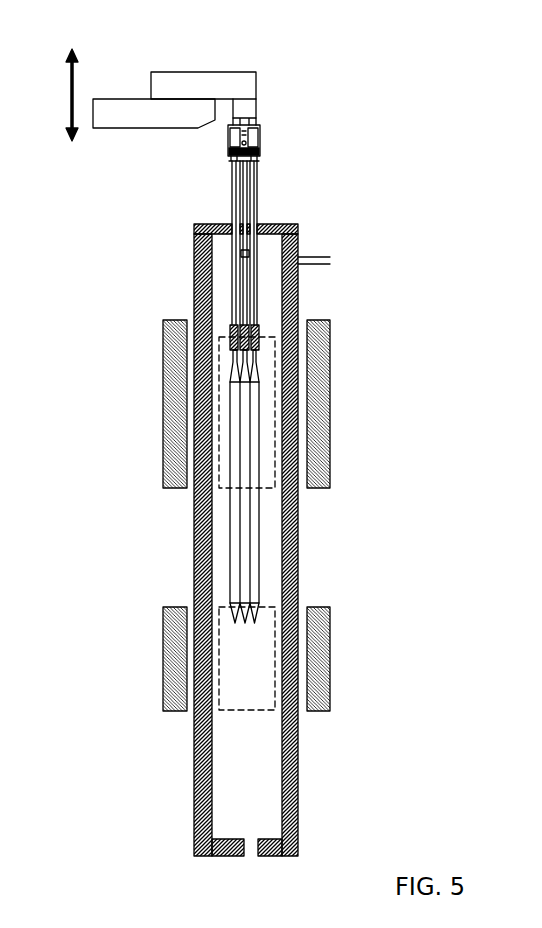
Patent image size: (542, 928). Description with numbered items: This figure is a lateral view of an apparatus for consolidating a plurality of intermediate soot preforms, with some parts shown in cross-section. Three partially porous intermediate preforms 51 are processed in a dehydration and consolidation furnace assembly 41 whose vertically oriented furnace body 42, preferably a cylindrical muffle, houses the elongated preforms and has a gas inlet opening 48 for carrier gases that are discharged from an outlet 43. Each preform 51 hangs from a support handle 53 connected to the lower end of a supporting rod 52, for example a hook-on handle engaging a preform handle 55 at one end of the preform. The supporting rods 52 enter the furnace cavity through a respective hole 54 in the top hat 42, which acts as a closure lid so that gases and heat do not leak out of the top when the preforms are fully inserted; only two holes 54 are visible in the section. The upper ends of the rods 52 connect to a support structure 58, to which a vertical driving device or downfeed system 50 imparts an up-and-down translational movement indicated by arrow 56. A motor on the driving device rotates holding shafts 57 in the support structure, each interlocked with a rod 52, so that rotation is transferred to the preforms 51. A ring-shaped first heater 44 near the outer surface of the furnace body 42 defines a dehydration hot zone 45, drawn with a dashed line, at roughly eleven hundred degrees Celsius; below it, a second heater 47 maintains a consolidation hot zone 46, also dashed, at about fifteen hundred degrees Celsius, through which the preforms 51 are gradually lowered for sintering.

The dehydration and consolidation furnace assembly 41 is at (188, 290).
The furnace body 42 is at (194, 229).
The outlet 43 is at (320, 257).
The first heater 44 is at (163, 383).
The dehydration hot zone 45 is at (263, 488).
The consolidation hot zone 46 is at (265, 710).
The second heater 47 is at (330, 656).
The gas inlet opening 48 is at (252, 857).
The vertical driving device or downfeed system 50 is at (179, 40).
The partially porous intermediate preform 51 is at (237, 513).
The supporting rod 52 is at (236, 192).
The support handle 53 is at (254, 338).
The hole 54 is at (230, 224).
The preform handle 55 is at (237, 372).
The arrow 56 is at (68, 92).
The holding shaft 57 is at (229, 161).
The support structure 58 is at (266, 148).